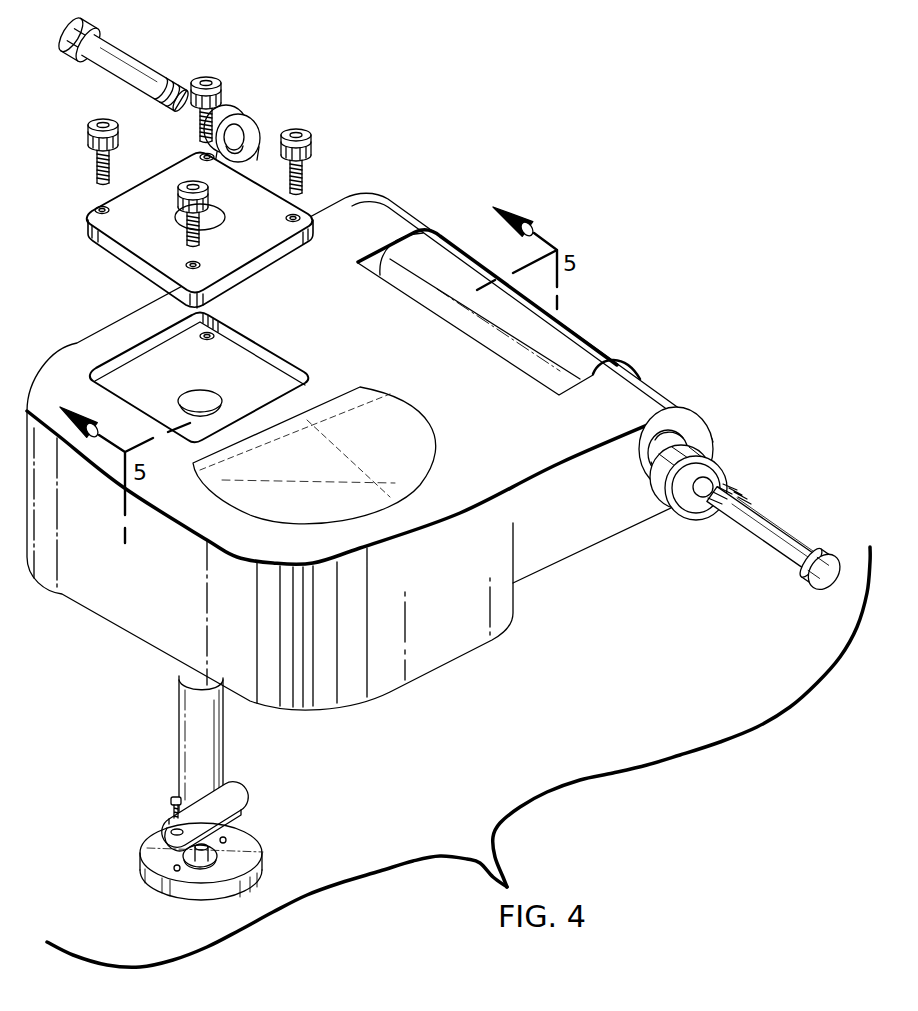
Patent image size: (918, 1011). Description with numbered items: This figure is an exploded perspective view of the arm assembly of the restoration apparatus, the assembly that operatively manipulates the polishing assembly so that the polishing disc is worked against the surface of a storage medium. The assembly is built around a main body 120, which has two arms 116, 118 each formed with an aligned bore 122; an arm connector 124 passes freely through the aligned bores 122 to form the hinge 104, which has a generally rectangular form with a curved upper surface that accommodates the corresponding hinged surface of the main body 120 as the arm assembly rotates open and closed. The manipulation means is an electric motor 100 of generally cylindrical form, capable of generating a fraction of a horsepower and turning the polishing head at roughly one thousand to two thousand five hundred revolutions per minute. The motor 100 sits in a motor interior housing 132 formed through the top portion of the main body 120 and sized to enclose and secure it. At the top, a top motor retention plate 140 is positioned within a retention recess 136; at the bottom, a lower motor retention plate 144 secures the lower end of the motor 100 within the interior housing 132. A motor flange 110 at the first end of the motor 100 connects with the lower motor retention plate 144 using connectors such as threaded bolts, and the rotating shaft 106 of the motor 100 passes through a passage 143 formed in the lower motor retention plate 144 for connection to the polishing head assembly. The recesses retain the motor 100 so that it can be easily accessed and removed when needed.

The electric motor 100 is at (170, 720).
The hinge 104 is at (540, 337).
The rotating shaft 106 is at (207, 847).
The motor flange 110 is at (177, 823).
The arm 116 is at (617, 393).
The arm 118 is at (368, 224).
The main body 120 is at (440, 640).
The aligned bore 122 is at (690, 445).
The arm connector 124 is at (123, 53).
The motor interior housing 132 is at (187, 397).
The retention recess 136 is at (173, 352).
The top motor retention plate 140 is at (130, 205).
The passage 143 is at (193, 867).
The lower motor retention plate 144 is at (240, 870).